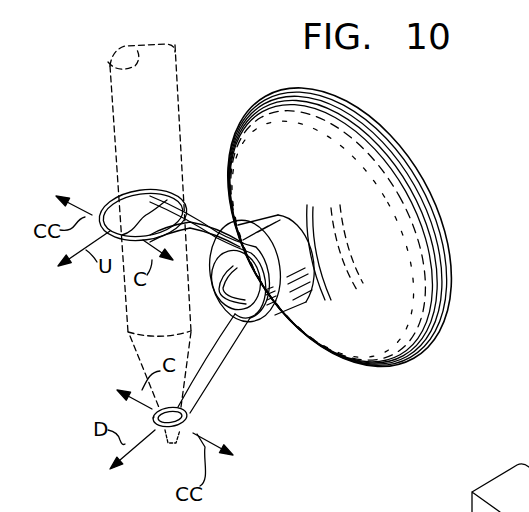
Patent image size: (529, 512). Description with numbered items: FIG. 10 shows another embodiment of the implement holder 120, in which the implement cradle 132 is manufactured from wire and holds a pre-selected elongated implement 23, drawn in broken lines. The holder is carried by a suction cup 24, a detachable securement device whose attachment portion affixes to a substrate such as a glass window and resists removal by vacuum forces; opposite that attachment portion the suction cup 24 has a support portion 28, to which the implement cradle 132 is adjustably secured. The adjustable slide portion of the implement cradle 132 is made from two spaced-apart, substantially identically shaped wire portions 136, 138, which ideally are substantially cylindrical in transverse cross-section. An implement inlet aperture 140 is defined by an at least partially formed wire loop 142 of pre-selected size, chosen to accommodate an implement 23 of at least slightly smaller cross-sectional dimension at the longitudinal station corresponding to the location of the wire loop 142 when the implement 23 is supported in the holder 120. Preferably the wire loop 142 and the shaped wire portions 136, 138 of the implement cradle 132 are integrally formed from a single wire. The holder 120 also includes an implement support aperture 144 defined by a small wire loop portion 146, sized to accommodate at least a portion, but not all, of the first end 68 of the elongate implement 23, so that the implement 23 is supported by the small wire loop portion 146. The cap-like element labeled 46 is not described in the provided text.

The elongated implement 23 is at (177, 80).
The suction cup 24 is at (378, 160).
The support portion 28 is at (300, 313).
The hub cap 46 is at (278, 226).
The first end 68 is at (168, 440).
The implement holder 120 is at (303, 437).
The implement cradle 132 is at (305, 363).
The shaped wire portion 136 is at (205, 372).
The shaped wire portion 138 is at (232, 394).
The implement inlet aperture 140 is at (143, 213).
The partially formed wire loop 142 is at (112, 200).
The implement support aperture 144 is at (180, 417).
The small wire loop portion 146 is at (152, 418).